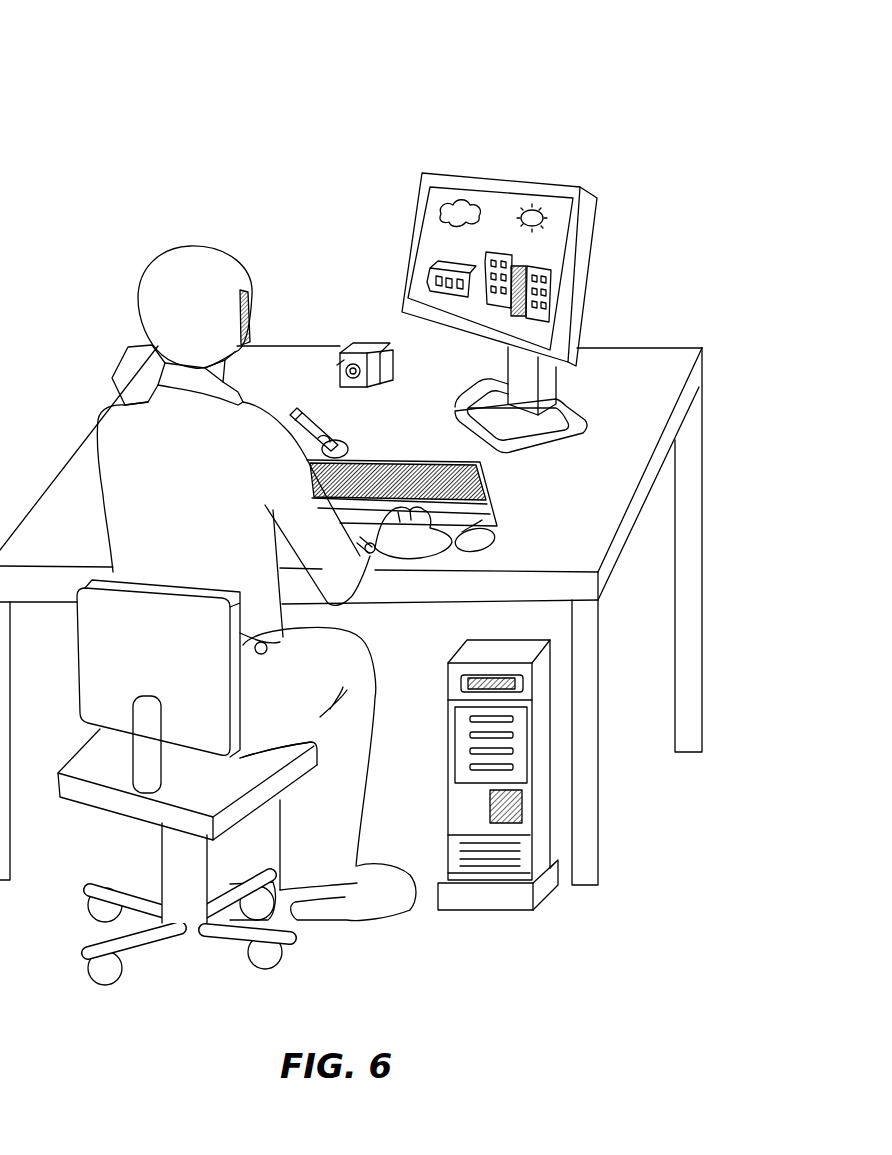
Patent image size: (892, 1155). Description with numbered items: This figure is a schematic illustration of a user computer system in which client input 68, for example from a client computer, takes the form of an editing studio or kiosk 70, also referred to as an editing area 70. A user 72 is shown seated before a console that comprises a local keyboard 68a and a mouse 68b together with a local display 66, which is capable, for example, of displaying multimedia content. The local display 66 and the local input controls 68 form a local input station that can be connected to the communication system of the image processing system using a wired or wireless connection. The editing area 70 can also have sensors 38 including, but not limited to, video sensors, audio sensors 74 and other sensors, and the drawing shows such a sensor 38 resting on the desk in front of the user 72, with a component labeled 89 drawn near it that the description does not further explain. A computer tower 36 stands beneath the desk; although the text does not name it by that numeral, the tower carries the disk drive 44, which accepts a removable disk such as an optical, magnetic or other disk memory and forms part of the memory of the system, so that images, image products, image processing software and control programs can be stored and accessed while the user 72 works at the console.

The editing studio or kiosk 70 is at (280, 103).
The user 72 is at (125, 396).
The local display 66 is at (528, 178).
The local input controls 68 is at (633, 300).
The sensors 38 is at (374, 345).
The camera mount 89 is at (340, 360).
The local keyboard 68a is at (483, 463).
The mouse 68b is at (500, 540).
The audio sensors 74 is at (296, 410).
The computer tower 36 is at (492, 893).
The disk drive 44 is at (462, 683).